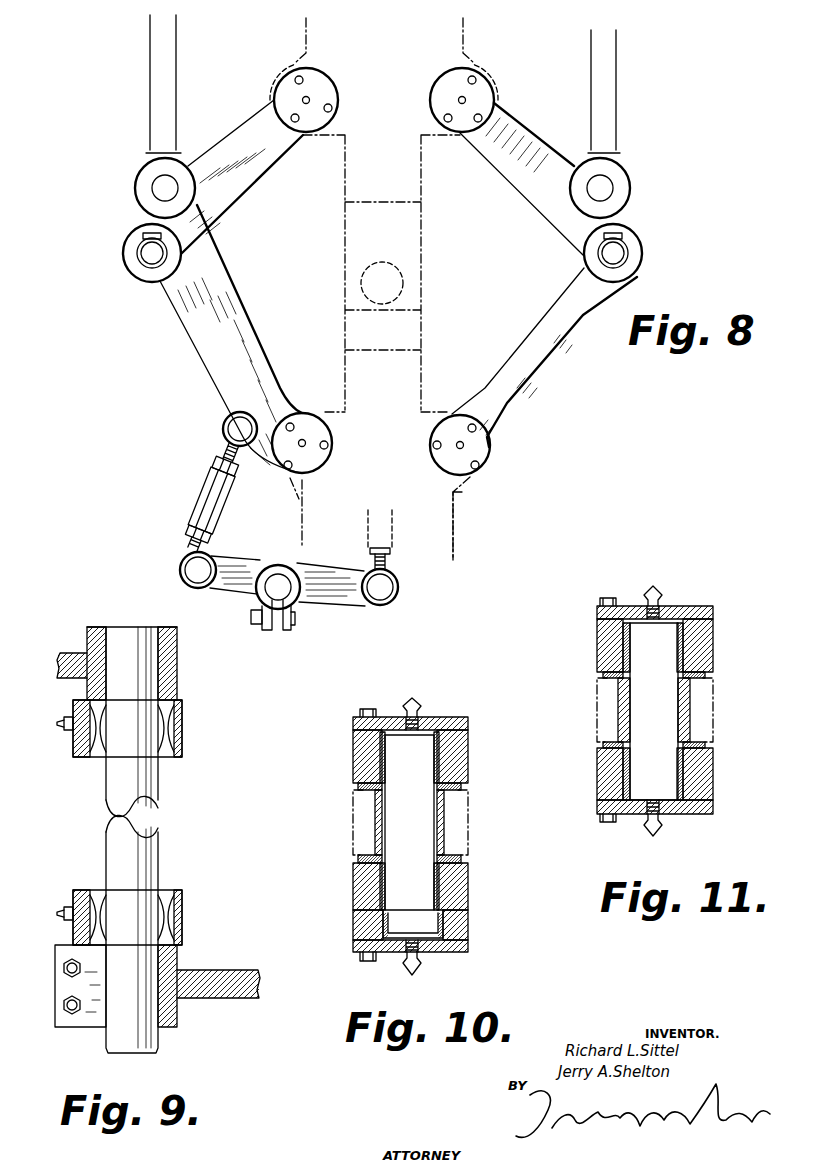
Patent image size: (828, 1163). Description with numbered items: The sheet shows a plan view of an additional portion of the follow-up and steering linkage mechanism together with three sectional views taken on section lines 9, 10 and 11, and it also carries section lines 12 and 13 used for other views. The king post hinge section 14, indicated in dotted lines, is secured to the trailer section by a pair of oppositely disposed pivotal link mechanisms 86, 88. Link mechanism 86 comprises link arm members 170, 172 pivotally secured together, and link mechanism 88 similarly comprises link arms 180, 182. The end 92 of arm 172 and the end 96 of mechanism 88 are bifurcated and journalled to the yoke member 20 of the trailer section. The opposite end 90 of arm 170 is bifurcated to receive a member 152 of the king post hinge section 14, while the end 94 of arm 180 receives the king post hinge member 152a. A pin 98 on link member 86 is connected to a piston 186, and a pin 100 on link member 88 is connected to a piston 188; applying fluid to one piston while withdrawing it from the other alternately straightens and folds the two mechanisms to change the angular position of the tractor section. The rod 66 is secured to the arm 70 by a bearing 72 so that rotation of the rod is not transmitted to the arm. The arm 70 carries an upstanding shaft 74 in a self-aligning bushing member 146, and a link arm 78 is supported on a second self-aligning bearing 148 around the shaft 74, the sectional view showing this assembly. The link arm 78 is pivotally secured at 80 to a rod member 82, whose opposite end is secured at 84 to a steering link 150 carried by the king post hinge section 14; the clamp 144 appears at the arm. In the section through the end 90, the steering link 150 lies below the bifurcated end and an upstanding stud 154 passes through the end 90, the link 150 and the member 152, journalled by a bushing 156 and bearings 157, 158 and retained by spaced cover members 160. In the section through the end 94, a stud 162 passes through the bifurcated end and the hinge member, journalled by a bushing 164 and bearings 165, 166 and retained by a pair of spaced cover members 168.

In FIG. 8, the yoke member 20 is at (411, 183).
In FIG. 8, the king post hinge section 14 is at (412, 361).
In FIG. 10, the king post hinge section 14 is at (457, 828).
In FIG. 8, the piston member 186 is at (165, 99).
In FIG. 8, the piston member 188 is at (607, 86).
In FIG. 8, the pivotal link mechanism 86 is at (204, 286).
In FIG. 8, the pivotal link mechanism 88 is at (556, 275).
In FIG. 8, the pin 98 is at (155, 183).
In FIG. 8, the pin 100 is at (605, 186).
In FIG. 8, the link arm member 172 is at (240, 182).
In FIG. 8, the link arm 182 is at (523, 155).
In FIG. 8, the link arm member 170 is at (225, 352).
In FIG. 8, the link arm 180 is at (540, 350).
In FIG. 8, the section line 13— 13 is at (671, 243).
In FIG. 8, the section line 12— 12 is at (351, 90).
In FIG. 8, the section line 10— 10 is at (302, 545).
In FIG. 8, the section line 11— 11 is at (525, 435).
In FIG. 8, the section line 9— 9 is at (286, 574).
In FIG. 8, the end of linkage mechanism 92 is at (288, 98).
In FIG. 8, the end of linkage mechanism 96 is at (455, 80).
In FIG. 8, the bifurcated end 90 is at (317, 430).
In FIG. 10, the bifurcated end 90 is at (457, 763).
In FIG. 8, the bifurcated end 94 is at (480, 458).
In FIG. 11, the bifurcated end 94 is at (705, 646).
In FIG. 8, the steering link 150 is at (260, 452).
In FIG. 10, the steering link 150 is at (468, 927).
In FIG. 8, the member of king post hinge section 152 is at (294, 482).
In FIG. 10, the member of king post hinge section 152 is at (362, 822).
In FIG. 8, the king post hinge member 152a is at (465, 483).
In FIG. 11, the king post hinge member 152a is at (700, 718).
In FIG. 8, the connection 84 is at (237, 422).
In FIG. 8, the rod member 82 is at (218, 492).
In FIG. 8, the pivotal connection 80 is at (185, 560).
In FIG. 8, the arm 70 is at (312, 585).
In FIG. 9, the arm 70 is at (230, 978).
In FIG. 8, the link arm 78 is at (225, 592).
In FIG. 9, the link arm 78 is at (68, 653).
In FIG. 8, the clamp 144 is at (283, 582).
In FIG. 8, the bearing 72 is at (386, 572).
In FIG. 8, the rod 66 is at (380, 530).
In FIG. 9, the rod member / shaft 74 is at (157, 860).
In FIG. 9, the self-aligning bearing 148 is at (183, 742).
In FIG. 9, the self-aligning bushing member 146 is at (182, 912).
In FIG. 10, the cover members 160 is at (353, 730).
In FIG. 10, the bearing 158 is at (468, 730).
In FIG. 10, the stud 154 is at (467, 870).
In FIG. 10, the bushing 156 is at (447, 815).
In FIG. 10, the bearing 157 is at (468, 898).
In FIG. 11, the cover members 168 is at (626, 606).
In FIG. 11, the stud 162 is at (670, 632).
In FIG. 11, the bearing 166 is at (625, 640).
In FIG. 11, the bushing 164 is at (620, 697).
In FIG. 11, the bearing 165 is at (625, 780).